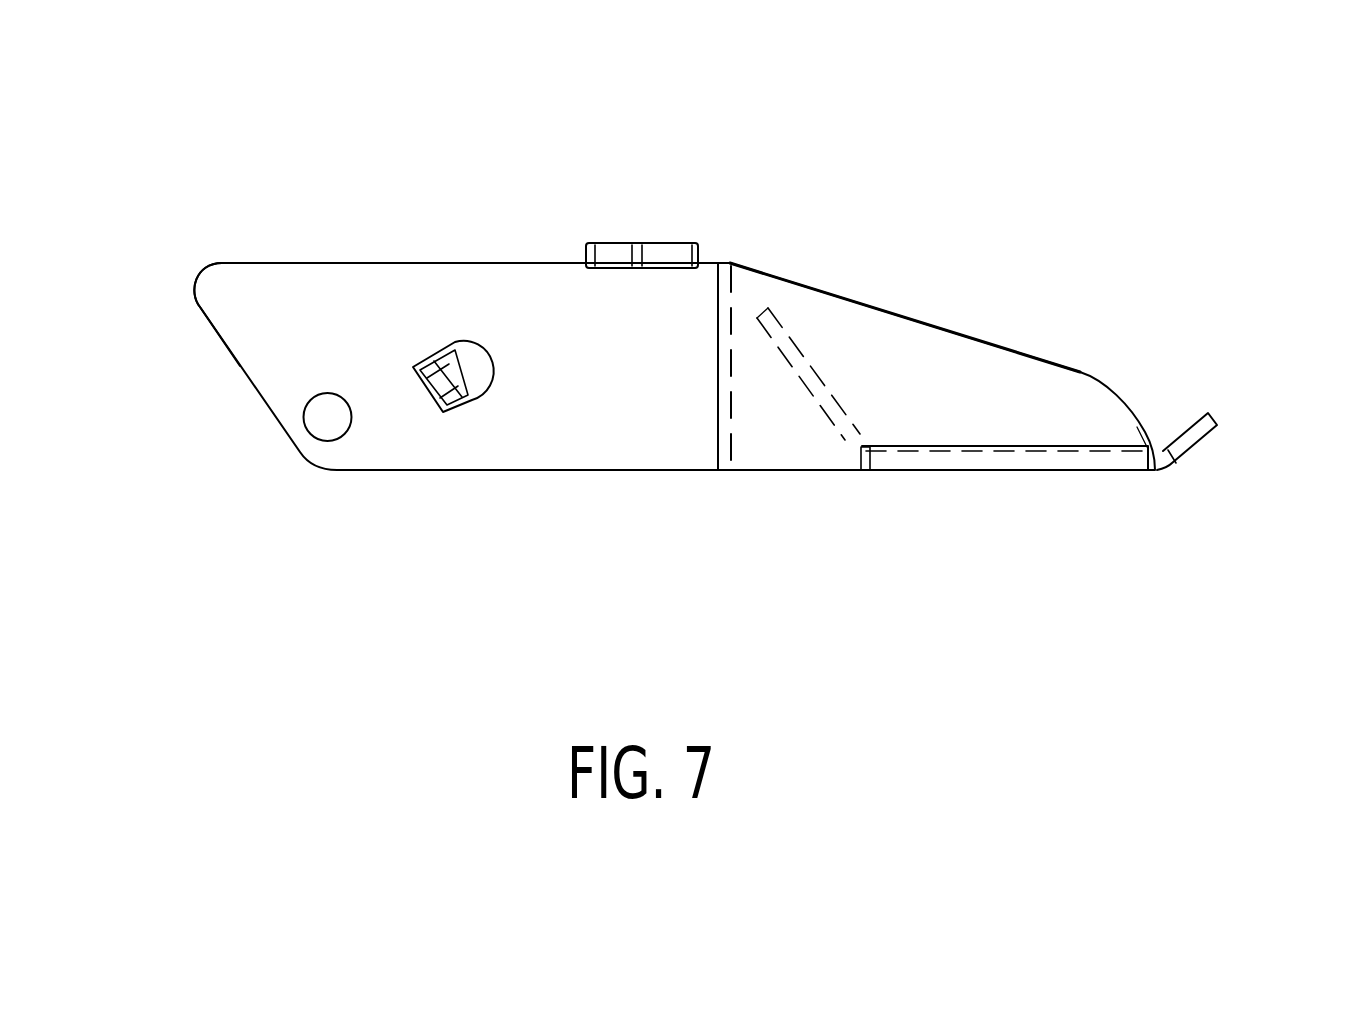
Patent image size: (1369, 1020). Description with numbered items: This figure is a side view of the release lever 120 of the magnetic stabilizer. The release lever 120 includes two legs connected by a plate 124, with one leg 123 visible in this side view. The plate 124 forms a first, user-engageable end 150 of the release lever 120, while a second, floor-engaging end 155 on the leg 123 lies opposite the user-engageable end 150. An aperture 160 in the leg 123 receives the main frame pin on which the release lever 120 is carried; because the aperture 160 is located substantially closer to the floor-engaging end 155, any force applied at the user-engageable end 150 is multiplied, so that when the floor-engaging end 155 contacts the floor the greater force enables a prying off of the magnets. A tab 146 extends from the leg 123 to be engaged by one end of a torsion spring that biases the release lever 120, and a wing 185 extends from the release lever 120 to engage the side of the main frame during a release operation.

The release lever 120 is at (704, 388).
The leg 123 is at (595, 412).
The plate 124 is at (995, 462).
The tab 146 is at (443, 412).
The user-engageable end 150 is at (1187, 442).
The floor-engaging end 155 is at (220, 292).
The aperture 160 is at (308, 433).
The wing 185 is at (657, 255).